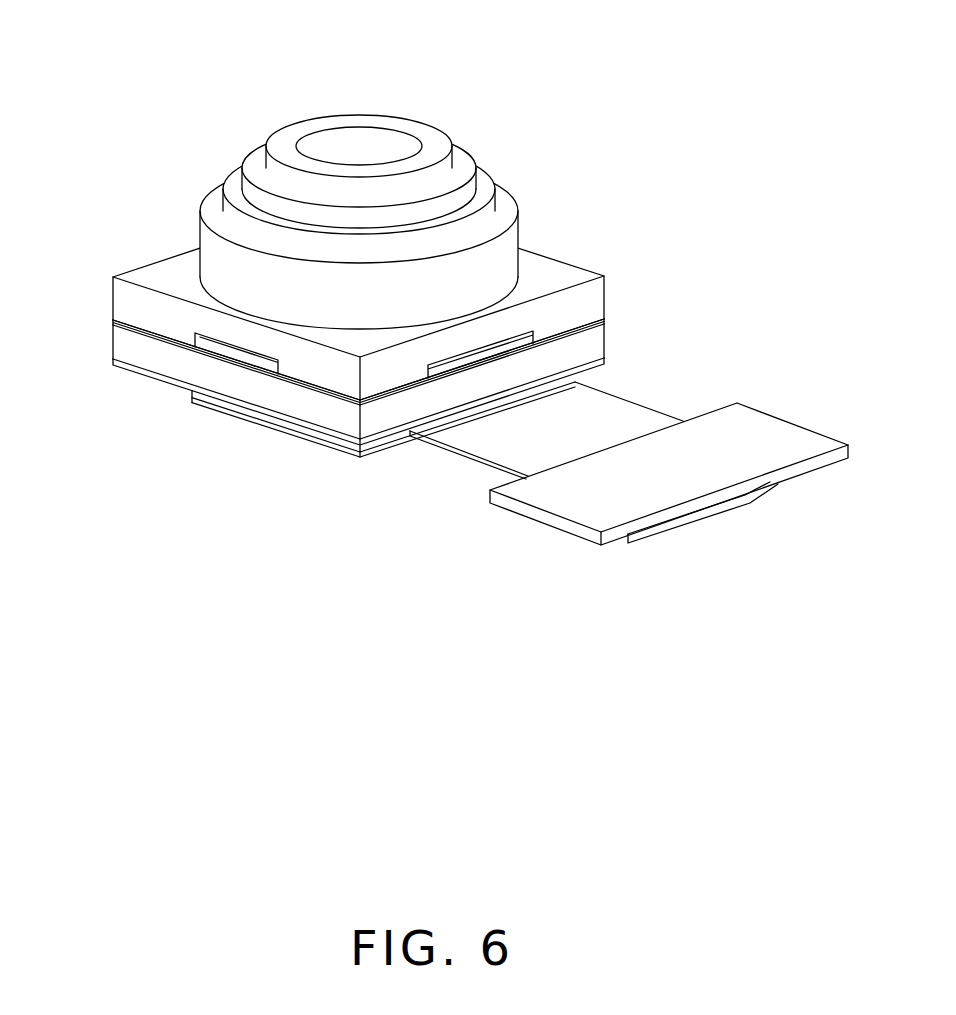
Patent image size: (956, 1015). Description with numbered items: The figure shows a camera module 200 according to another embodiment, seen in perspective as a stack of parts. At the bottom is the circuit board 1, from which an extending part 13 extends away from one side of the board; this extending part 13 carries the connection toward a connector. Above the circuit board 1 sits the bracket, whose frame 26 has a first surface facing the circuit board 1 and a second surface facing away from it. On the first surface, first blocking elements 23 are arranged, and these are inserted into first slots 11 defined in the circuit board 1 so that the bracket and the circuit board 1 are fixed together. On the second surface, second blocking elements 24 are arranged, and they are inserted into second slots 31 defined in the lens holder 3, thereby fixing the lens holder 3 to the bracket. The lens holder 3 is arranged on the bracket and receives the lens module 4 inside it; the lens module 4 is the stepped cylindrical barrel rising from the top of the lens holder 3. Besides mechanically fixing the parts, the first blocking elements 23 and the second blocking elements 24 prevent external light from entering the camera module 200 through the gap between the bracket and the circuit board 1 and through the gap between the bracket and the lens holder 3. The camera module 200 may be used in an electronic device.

The camera module 200 is at (477, 49).
The circuit board 1 is at (318, 434).
The first slots 11 is at (253, 418).
The extending part 13 is at (607, 417).
The first blocking elements 23 is at (203, 403).
The second blocking elements 24 is at (157, 338).
The frame 26 is at (157, 360).
The lens holder 3 is at (125, 300).
The second slots 31 is at (532, 331).
The lens module 4 is at (387, 143).